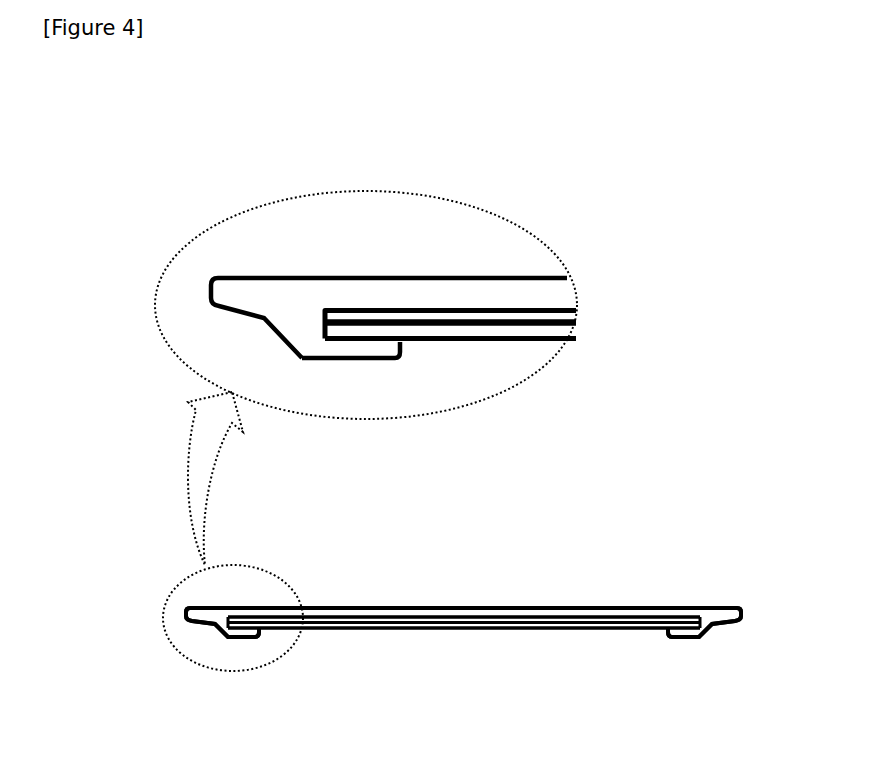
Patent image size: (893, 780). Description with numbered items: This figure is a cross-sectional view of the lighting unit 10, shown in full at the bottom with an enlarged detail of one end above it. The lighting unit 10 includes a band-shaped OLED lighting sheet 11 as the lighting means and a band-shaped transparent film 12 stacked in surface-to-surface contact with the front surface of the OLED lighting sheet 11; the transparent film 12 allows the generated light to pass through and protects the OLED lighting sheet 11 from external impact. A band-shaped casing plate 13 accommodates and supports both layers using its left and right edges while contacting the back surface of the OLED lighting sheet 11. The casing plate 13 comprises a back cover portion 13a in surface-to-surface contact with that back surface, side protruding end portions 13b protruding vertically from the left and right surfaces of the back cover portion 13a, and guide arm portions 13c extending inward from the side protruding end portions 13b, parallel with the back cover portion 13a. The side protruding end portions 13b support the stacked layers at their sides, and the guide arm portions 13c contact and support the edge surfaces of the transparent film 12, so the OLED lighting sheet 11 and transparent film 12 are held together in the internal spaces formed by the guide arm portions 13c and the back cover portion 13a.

The lighting unit 10 is at (601, 530).
The OLED lighting sheet 11 is at (452, 317).
The transparent film 12 is at (498, 332).
The casing plate 13 is at (413, 390).
The back cover portion 13a is at (433, 285).
The side protruding end portions 13b is at (285, 317).
The guide arm portions 13c is at (357, 360).